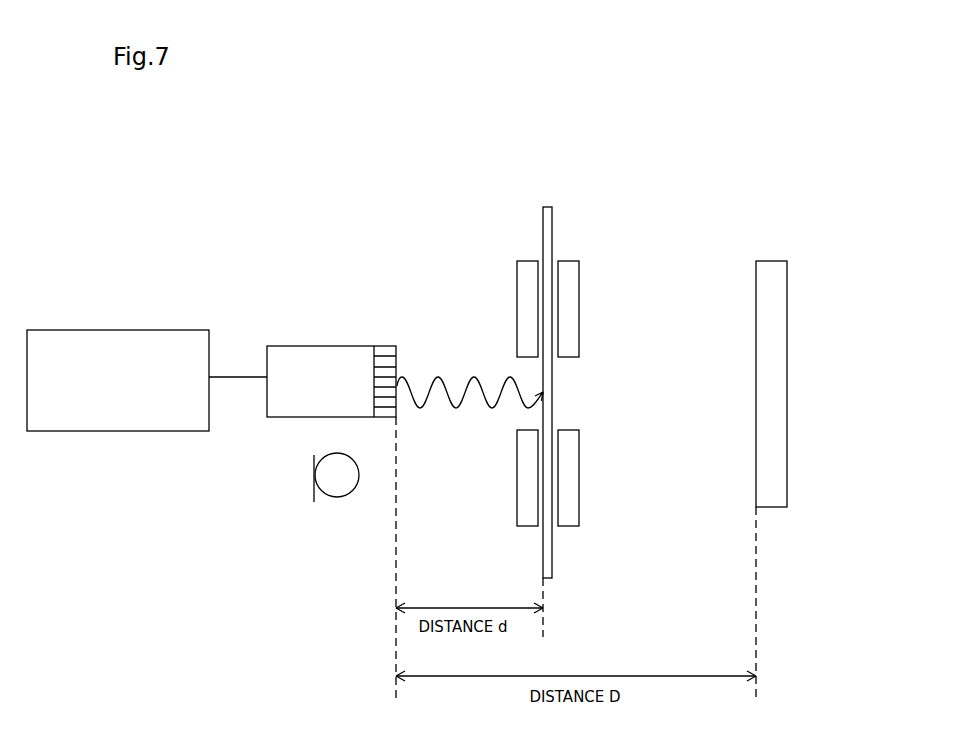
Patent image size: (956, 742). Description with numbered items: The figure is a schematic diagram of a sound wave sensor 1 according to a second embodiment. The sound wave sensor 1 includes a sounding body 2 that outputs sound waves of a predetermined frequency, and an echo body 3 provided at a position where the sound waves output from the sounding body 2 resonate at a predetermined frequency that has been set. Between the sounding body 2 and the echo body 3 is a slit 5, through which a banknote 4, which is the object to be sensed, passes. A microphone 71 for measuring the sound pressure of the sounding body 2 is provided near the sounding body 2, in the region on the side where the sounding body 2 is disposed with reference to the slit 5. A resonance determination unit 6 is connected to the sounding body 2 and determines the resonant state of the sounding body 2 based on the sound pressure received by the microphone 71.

The sound wave sensor 1 is at (723, 160).
The sounding body 2 is at (316, 346).
The echo body 3 is at (787, 286).
The banknote 4 is at (543, 222).
The slit 5 is at (556, 258).
The resonance determination unit 6 is at (88, 330).
The microphone 71 is at (333, 497).